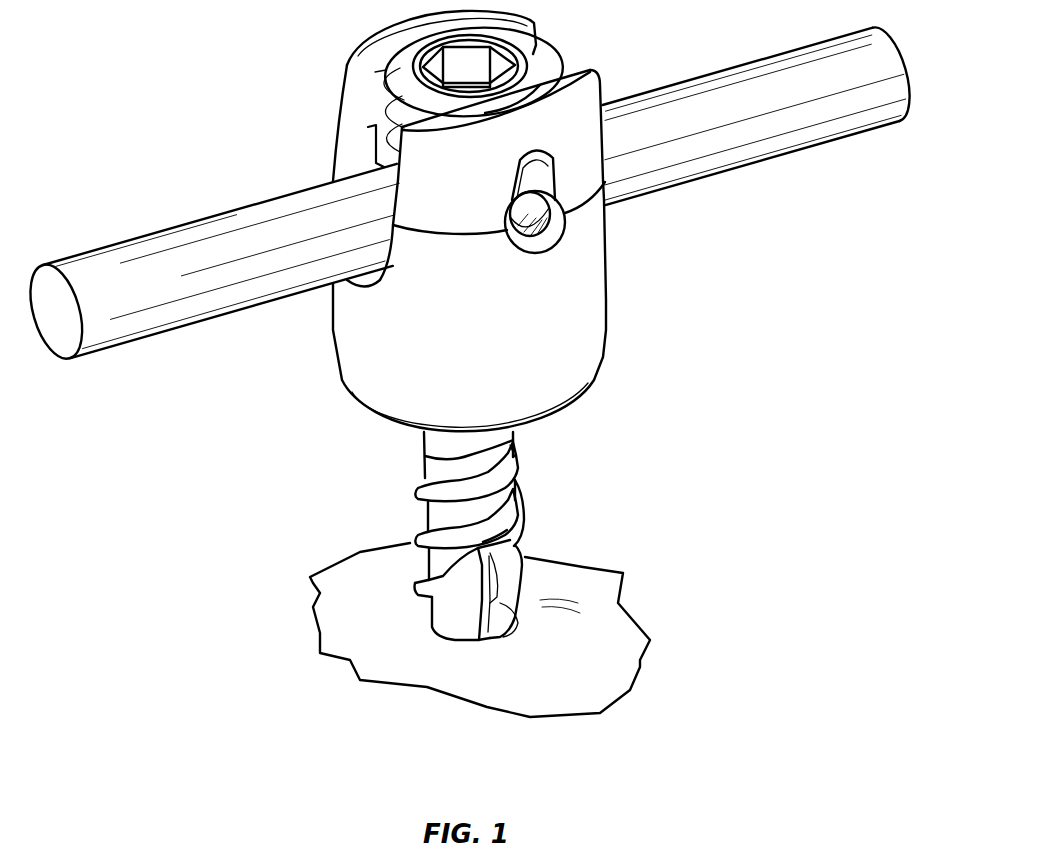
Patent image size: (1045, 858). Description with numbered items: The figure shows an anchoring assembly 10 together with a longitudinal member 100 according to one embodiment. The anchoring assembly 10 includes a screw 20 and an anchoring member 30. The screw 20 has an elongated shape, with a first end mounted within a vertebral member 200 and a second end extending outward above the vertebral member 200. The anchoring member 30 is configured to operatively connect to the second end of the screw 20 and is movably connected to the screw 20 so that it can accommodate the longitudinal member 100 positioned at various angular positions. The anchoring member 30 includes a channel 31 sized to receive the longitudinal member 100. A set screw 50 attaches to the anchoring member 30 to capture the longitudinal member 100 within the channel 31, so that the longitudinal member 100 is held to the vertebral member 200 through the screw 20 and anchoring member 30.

The bone anchor assembly 10 is at (830, 353).
The screw 20 is at (467, 462).
The anchoring member 30 is at (560, 295).
The channel 31 is at (374, 154).
The set screw 50 is at (386, 107).
The longitudinal member 100 is at (673, 115).
The vertebral member 200 is at (593, 630).